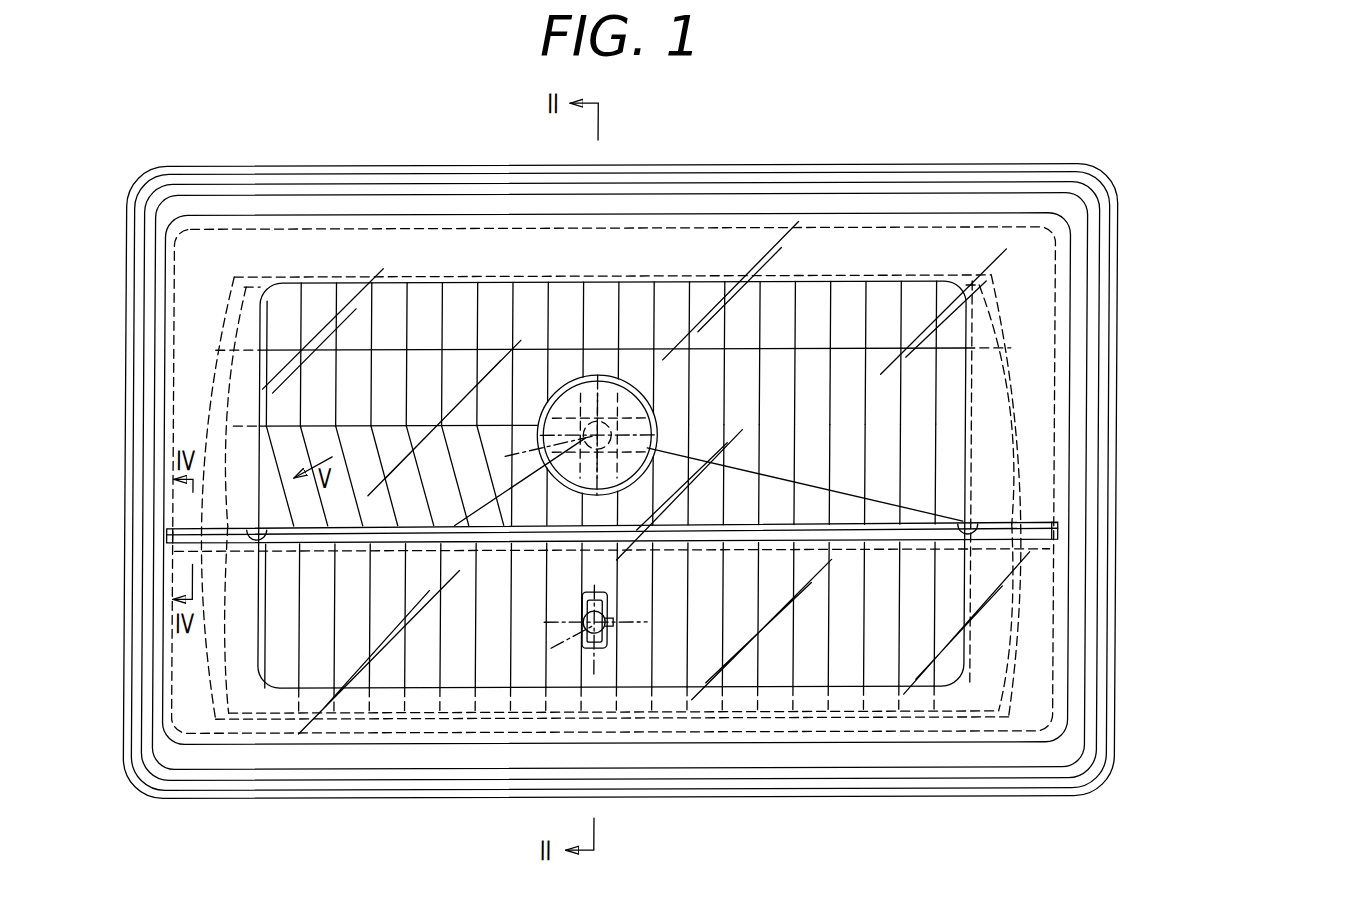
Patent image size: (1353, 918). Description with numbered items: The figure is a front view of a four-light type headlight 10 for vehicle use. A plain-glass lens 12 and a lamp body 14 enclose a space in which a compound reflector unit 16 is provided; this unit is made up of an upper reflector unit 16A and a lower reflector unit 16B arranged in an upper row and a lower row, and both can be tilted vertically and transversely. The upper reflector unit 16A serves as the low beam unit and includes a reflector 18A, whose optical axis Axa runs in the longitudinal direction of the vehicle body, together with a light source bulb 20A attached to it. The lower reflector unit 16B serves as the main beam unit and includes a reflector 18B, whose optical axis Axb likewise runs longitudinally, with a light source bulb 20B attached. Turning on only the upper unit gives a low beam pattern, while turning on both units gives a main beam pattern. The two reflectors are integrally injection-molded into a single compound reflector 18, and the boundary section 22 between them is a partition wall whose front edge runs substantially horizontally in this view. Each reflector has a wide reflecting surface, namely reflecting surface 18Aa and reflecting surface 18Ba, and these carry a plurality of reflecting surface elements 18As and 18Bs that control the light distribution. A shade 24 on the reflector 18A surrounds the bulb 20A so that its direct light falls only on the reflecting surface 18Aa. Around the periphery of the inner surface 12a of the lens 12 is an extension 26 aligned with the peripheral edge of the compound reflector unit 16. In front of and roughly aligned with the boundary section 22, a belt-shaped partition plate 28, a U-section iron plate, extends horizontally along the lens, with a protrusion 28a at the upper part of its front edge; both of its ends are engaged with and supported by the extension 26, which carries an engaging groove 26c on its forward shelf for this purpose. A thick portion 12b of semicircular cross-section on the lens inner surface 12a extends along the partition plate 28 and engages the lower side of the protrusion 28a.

The headlight 10 is at (1015, 140).
The lens 12 is at (791, 203).
The inner surface of the lens 12a is at (1057, 273).
The thick portion 12b is at (342, 550).
The lamp body 14 is at (876, 158).
The compound reflector unit 16 is at (1262, 660).
The upper reflector unit 16A is at (1034, 398).
The lower reflector unit 16B is at (1040, 652).
The compound reflector 18 is at (1178, 460).
The reflector 18A is at (1030, 461).
The reflecting surface 18Aa is at (463, 303).
The reflecting surface elements 18As is at (570, 281).
The reflector 18B is at (1034, 599).
The reflecting surface 18Ba is at (454, 666).
The reflecting surface elements 18Bs is at (845, 668).
The light source bulb 20A is at (620, 427).
The light source bulb 20B is at (612, 607).
The boundary section 22 is at (775, 517).
The shade 24 is at (634, 401).
The extension 26 is at (349, 254).
The engaging groove 26c is at (963, 530).
The partition plate 28 is at (879, 520).
The protrusion 28a is at (524, 534).
The optical axis Axa is at (526, 457).
The optical axis Axb is at (552, 651).